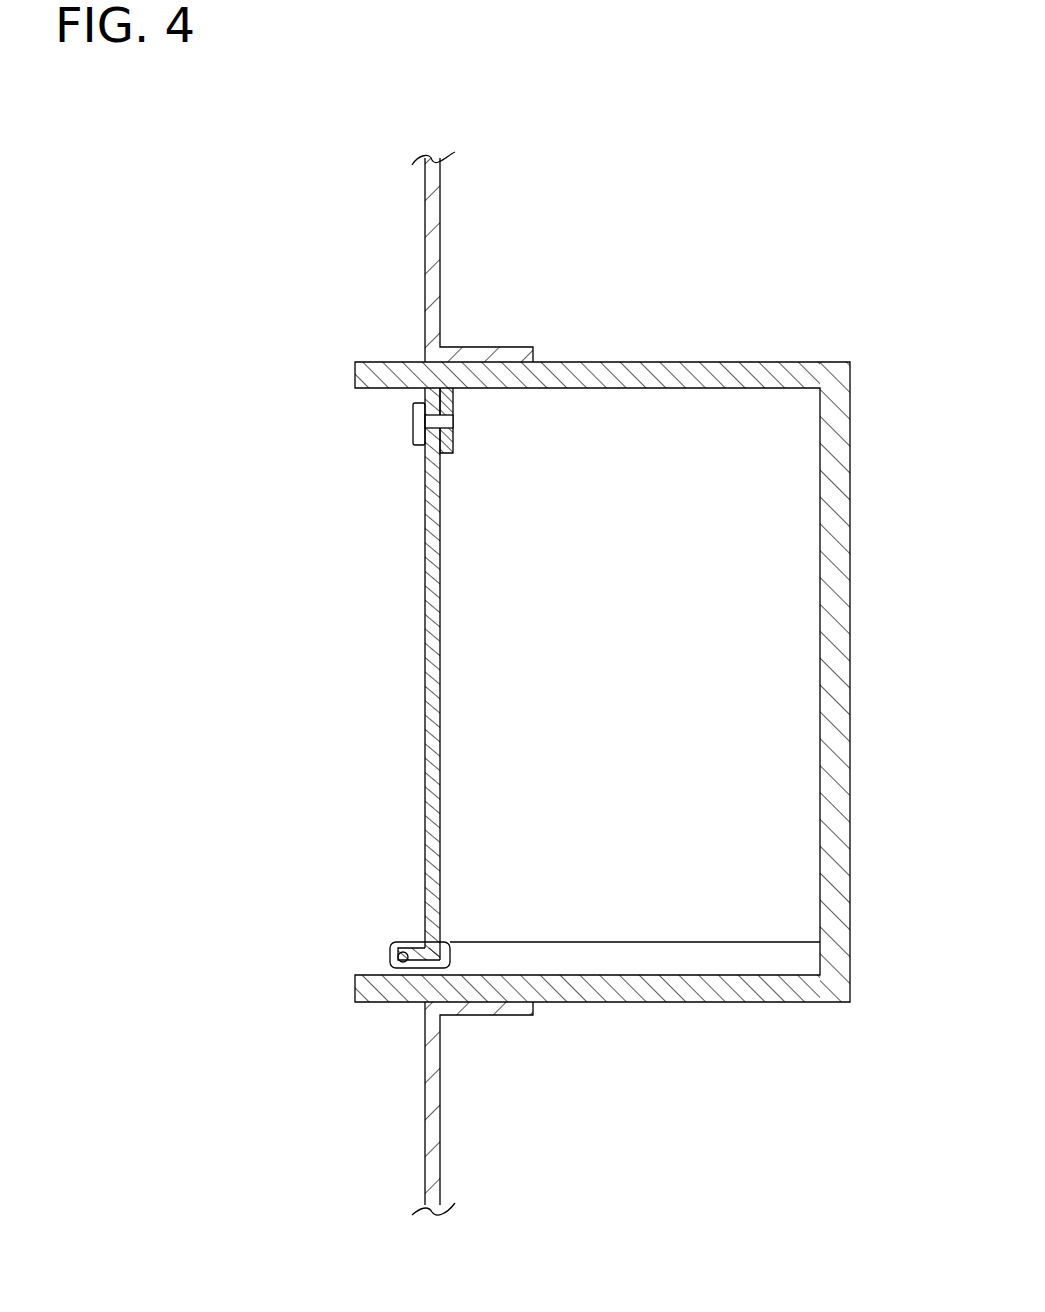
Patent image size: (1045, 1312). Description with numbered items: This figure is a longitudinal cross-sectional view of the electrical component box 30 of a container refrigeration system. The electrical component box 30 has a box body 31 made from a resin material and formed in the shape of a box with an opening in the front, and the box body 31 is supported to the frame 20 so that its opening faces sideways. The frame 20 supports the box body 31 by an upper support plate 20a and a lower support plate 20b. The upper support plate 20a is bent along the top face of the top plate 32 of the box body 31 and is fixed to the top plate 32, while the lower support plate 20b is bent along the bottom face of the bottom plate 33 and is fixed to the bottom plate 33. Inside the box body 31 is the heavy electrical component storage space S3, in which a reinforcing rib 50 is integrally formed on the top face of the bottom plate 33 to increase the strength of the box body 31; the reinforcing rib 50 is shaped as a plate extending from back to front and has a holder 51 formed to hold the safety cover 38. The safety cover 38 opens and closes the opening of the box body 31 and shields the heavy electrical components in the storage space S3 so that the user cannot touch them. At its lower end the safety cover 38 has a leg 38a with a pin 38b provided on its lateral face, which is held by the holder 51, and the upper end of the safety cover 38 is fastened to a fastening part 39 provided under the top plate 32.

The electrical component box 30 is at (636, 592).
The box body 31 is at (672, 362).
The top plate 32 is at (605, 362).
The bottom plate 33 is at (627, 990).
The heavy electrical component storage space S3 is at (787, 631).
The frame 20 is at (417, 683).
The upper support plate 20a is at (432, 295).
The lower support plate 20b is at (432, 1060).
The safety cover 38 is at (423, 679).
The leg 38a is at (400, 943).
The pin 38b is at (395, 957).
The fastening part 39 is at (465, 435).
The reinforcing rib 50 is at (627, 942).
The holder 51 is at (448, 945).